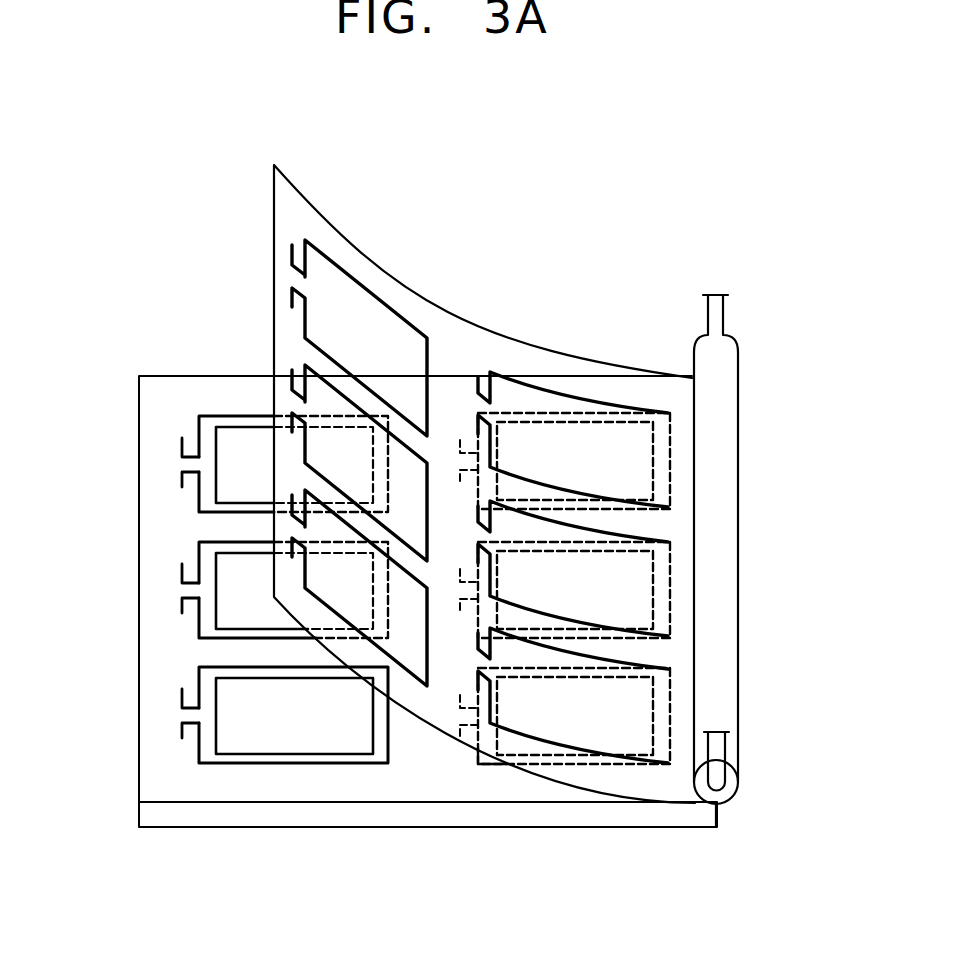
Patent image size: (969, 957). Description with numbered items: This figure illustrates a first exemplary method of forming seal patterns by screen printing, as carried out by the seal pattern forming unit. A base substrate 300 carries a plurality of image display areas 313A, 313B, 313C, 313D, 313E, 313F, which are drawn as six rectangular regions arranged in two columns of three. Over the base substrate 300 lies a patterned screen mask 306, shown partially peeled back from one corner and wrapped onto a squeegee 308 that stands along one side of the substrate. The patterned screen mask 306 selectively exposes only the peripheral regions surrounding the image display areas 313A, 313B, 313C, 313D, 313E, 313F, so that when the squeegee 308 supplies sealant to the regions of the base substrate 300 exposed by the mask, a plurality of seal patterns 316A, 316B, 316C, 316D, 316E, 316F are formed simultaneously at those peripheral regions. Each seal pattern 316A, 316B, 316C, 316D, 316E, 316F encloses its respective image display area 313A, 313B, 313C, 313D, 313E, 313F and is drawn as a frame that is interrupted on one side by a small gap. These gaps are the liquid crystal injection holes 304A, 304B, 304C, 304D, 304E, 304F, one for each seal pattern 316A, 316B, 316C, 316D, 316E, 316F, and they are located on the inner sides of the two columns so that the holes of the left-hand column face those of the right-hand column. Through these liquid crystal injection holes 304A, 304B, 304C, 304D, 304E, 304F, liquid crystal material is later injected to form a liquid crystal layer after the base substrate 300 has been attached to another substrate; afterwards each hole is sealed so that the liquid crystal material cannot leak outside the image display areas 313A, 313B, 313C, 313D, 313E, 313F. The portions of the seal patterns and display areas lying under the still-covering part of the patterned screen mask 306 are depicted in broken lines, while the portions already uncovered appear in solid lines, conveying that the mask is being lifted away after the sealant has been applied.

The base substrate 300 is at (700, 818).
The patterned screen mask 306 is at (313, 205).
The squeegee 308 is at (720, 367).
The liquid crystal injection hole 304A is at (457, 461).
The liquid crystal injection hole 304B is at (455, 590).
The liquid crystal injection hole 304C is at (453, 717).
The liquid crystal injection hole 304D is at (182, 462).
The liquid crystal injection hole 304E is at (182, 587).
The liquid crystal injection hole 304F is at (182, 714).
The image display area 313A is at (596, 476).
The image display area 313B is at (596, 605).
The image display area 313C is at (596, 731).
The image display area 313D is at (269, 475).
The image display area 313E is at (269, 601).
The image display area 313F is at (269, 727).
The seal pattern 316A is at (557, 413).
The seal pattern 316B is at (557, 542).
The seal pattern 316C is at (557, 668).
The seal pattern 316D is at (199, 428).
The seal pattern 316E is at (199, 553).
The seal pattern 316F is at (199, 680).